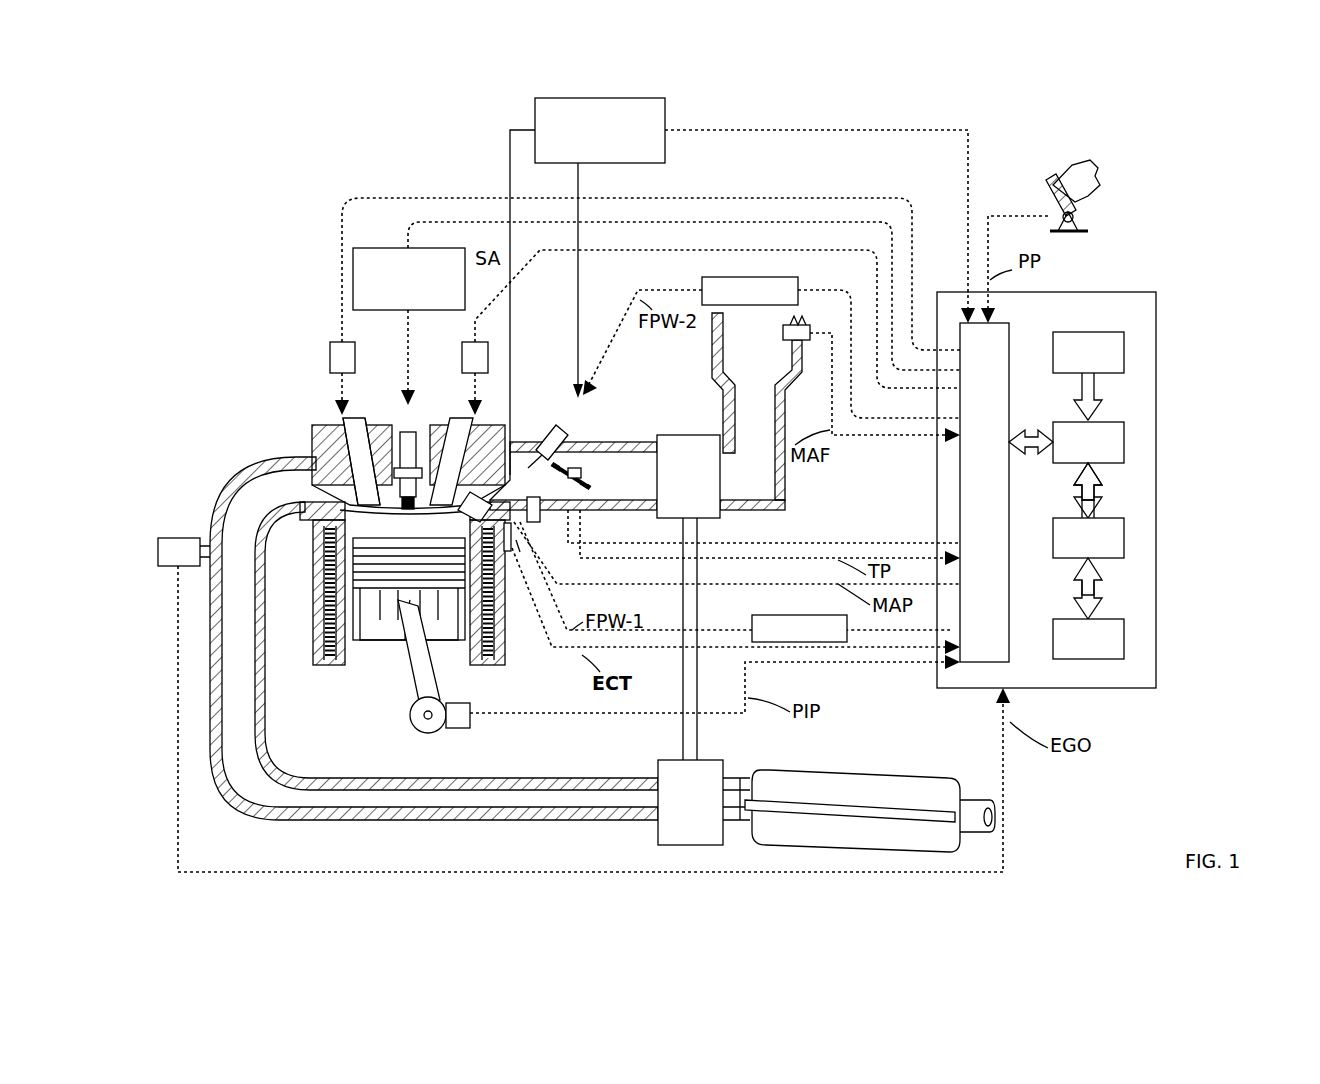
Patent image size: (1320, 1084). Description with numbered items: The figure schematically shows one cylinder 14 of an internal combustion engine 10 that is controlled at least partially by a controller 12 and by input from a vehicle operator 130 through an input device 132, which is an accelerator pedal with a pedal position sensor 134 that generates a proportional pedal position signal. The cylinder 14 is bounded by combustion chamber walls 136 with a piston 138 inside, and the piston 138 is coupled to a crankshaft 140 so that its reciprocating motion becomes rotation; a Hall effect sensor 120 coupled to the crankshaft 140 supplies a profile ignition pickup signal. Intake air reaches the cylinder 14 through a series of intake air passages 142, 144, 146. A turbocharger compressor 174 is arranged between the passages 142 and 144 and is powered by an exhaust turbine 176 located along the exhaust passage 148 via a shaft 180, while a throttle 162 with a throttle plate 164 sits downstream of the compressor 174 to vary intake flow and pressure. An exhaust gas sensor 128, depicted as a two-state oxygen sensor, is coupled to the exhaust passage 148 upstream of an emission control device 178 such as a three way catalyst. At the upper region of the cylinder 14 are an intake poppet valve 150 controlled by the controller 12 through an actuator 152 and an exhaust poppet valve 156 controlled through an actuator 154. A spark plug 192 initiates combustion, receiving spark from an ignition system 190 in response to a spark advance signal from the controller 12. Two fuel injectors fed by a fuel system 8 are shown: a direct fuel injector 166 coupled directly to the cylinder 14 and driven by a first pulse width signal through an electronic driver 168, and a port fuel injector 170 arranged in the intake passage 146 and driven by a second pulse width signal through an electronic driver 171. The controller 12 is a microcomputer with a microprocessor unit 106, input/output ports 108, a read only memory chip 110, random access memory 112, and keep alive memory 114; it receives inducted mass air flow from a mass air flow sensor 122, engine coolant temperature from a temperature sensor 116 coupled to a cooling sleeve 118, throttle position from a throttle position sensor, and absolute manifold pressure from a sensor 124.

The fuel system 8 is at (628, 98).
The internal combustion engine 10 is at (250, 384).
The controller 12 is at (1156, 298).
The cylinder 14 is at (318, 545).
The microprocessor unit 106 is at (1124, 440).
The input/output ports 108 is at (1012, 330).
The read only memory chip 110 is at (1124, 351).
The random access memory 112 is at (1124, 540).
The keep alive memory 114 is at (1124, 640).
The temperature sensor 116 is at (518, 545).
The cooling sleeve 118 is at (505, 555).
The Hall effect sensor 120 is at (465, 728).
The mass air flow sensor 122 is at (800, 318).
The manifold pressure sensor 124 is at (542, 522).
The exhaust gas sensor 128 is at (158, 546).
The vehicle operator 130 is at (1100, 186).
The input device 132 is at (1050, 192).
The pedal position sensor 134 is at (1080, 218).
The combustion chamber walls 136 is at (348, 670).
The piston 138 is at (400, 620).
The crankshaft 140 is at (415, 732).
The intake air passage 142 is at (757, 406).
The intake air passage 144 is at (637, 476).
The intake air passage 146 is at (522, 476).
The exhaust passage 148 is at (434, 638).
The intake poppet valve 150 is at (432, 440).
The actuator 152 is at (462, 356).
The actuator 154 is at (330, 350).
The exhaust poppet valve 156 is at (322, 452).
The throttle 162 is at (572, 455).
The throttle plate 164 is at (562, 468).
The fuel injector 166 is at (478, 500).
The electronic driver 168 is at (752, 618).
The fuel injector 170 is at (560, 424).
The electronic driver 171 is at (702, 282).
The compressor 174 is at (668, 435).
The exhaust turbine 176 is at (658, 840).
The emission control device 178 is at (915, 775).
The shaft 180 is at (697, 728).
The ignition system 190 is at (365, 248).
The spark plug 192 is at (400, 440).